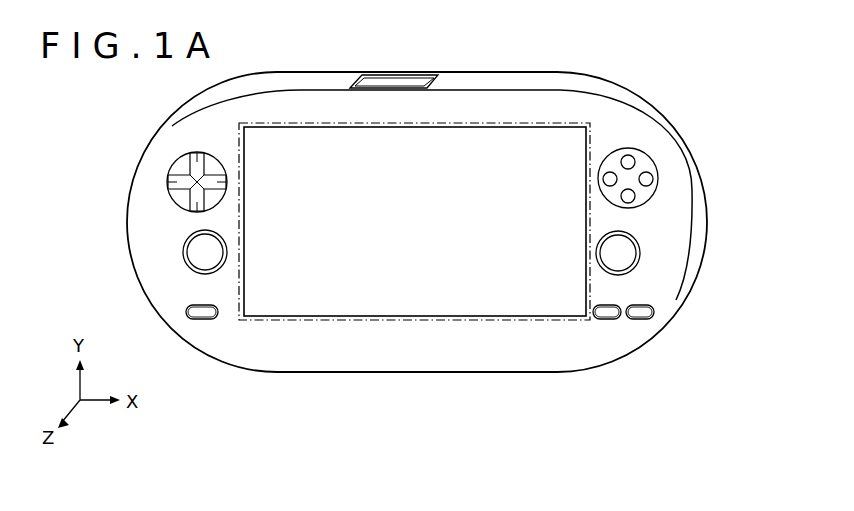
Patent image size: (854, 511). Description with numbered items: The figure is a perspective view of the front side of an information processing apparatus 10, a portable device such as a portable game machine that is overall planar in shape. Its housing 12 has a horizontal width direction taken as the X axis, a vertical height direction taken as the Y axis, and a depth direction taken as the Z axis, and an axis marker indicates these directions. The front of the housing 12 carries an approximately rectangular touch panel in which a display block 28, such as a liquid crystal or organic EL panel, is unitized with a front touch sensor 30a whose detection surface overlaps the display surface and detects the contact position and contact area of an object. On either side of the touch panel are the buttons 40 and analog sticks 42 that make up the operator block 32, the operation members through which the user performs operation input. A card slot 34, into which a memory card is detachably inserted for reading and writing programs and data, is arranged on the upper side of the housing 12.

The information processing apparatus 10 is at (400, 416).
The housing 12 is at (549, 361).
The display block 28 is at (479, 122).
The front touch sensor 30a is at (273, 323).
The operator block 32 is at (96, 174).
The card slot 34 is at (386, 74).
The buttons 40 is at (226, 186).
The analog sticks 42 is at (186, 247).